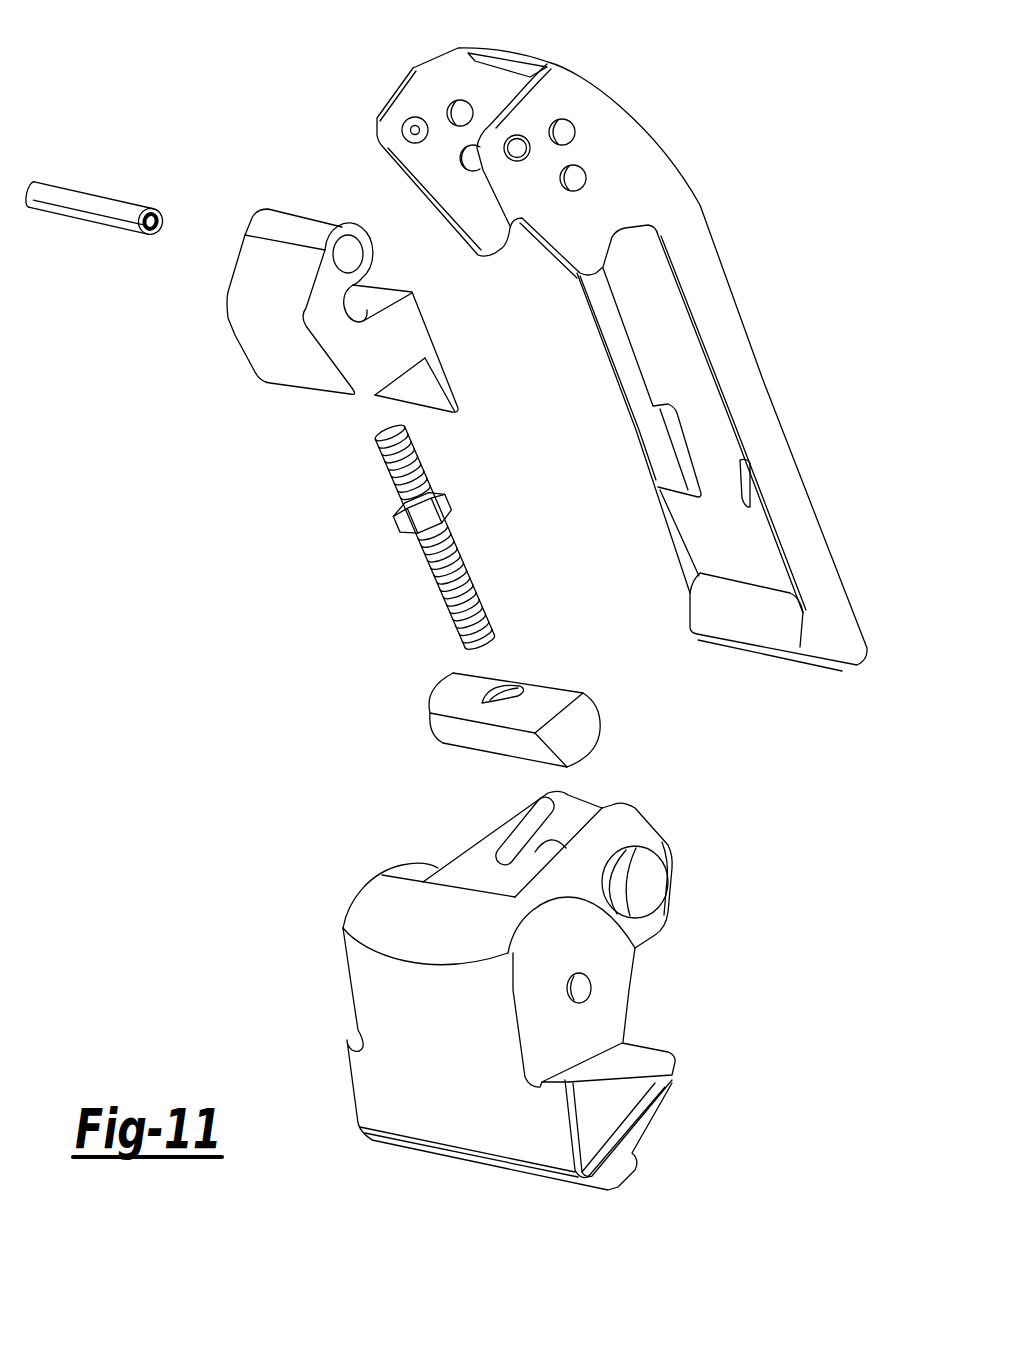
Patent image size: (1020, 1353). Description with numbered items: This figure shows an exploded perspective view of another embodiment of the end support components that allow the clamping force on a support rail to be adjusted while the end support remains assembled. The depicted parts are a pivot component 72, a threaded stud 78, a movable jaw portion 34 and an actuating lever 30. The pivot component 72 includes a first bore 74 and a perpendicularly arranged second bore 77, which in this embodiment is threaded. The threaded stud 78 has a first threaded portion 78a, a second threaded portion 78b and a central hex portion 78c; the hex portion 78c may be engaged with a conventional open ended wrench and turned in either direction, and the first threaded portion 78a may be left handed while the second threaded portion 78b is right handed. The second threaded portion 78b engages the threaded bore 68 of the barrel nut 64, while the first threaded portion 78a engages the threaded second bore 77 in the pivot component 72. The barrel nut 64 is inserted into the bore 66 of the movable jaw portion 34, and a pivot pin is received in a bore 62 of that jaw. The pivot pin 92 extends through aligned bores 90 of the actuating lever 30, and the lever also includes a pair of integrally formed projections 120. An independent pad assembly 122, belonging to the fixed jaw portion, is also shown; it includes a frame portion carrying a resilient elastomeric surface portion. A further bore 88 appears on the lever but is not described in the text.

The actuating lever 30 is at (755, 303).
The movable jaw portion 34 is at (476, 990).
The bore 62 is at (590, 993).
The barrel nut 64 is at (427, 668).
The bore 66 is at (645, 868).
The threaded bore 68 is at (502, 686).
The pivot component 72 is at (235, 241).
The first bore 74 is at (350, 253).
The second bore 77 is at (355, 288).
The threaded stud 78 is at (402, 540).
The first threaded portion 78a is at (405, 468).
The second threaded portion 78b is at (457, 589).
The central hex portion 78c is at (378, 530).
The lever hole 88 is at (577, 179).
The aligned bores 90 is at (566, 130).
The pivot pin 92 is at (97, 198).
The projections 120 is at (748, 505).
The pad assembly 122 is at (667, 1126).